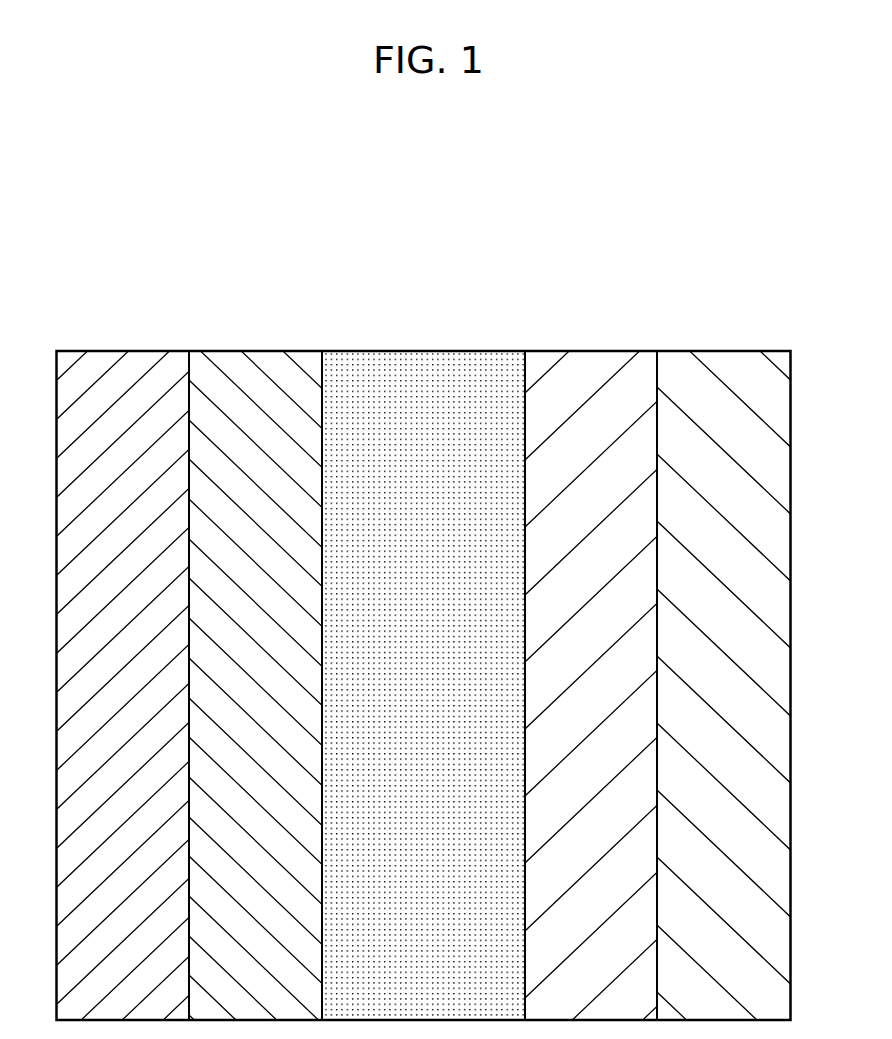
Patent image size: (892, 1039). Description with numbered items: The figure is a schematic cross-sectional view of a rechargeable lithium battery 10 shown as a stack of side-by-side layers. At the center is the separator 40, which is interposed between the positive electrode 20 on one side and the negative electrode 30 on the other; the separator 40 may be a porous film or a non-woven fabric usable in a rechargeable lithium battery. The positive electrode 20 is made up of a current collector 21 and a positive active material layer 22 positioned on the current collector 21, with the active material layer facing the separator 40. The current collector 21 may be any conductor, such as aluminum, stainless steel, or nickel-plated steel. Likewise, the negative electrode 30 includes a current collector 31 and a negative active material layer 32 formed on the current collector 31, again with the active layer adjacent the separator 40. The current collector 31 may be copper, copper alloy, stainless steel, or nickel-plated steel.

The rechargeable lithium battery 10 is at (407, 213).
The positive electrode 20 is at (118, 300).
The current collector 21 is at (130, 357).
The positive active material layer 22 is at (261, 357).
The negative electrode 30 is at (580, 300).
The current collector 31 is at (720, 357).
The negative active material layer 32 is at (591, 357).
The separator 40 is at (419, 357).